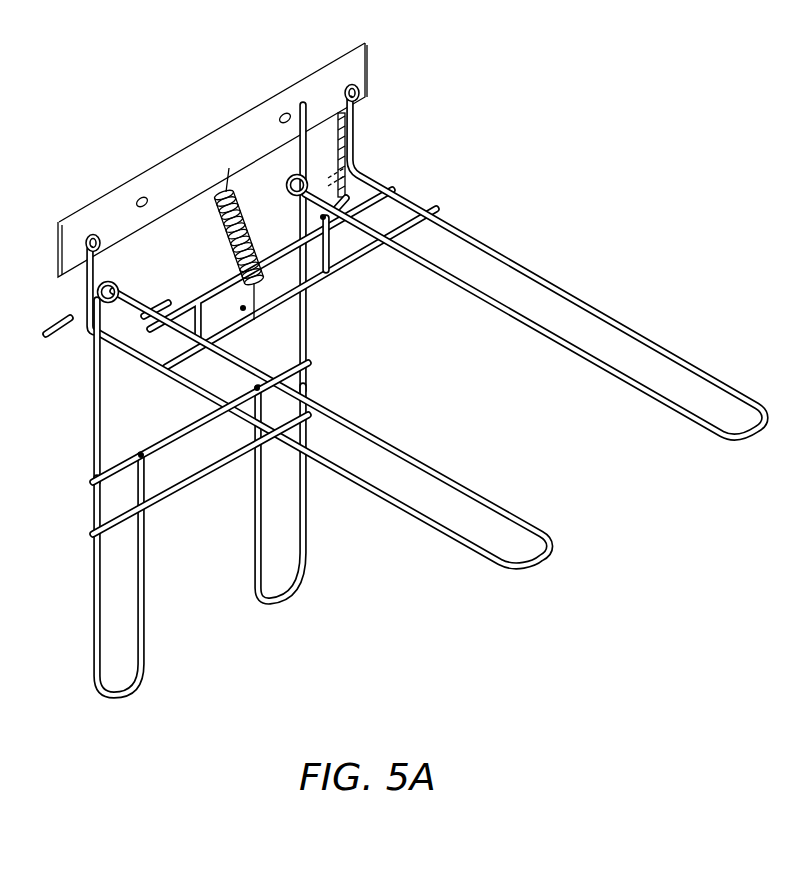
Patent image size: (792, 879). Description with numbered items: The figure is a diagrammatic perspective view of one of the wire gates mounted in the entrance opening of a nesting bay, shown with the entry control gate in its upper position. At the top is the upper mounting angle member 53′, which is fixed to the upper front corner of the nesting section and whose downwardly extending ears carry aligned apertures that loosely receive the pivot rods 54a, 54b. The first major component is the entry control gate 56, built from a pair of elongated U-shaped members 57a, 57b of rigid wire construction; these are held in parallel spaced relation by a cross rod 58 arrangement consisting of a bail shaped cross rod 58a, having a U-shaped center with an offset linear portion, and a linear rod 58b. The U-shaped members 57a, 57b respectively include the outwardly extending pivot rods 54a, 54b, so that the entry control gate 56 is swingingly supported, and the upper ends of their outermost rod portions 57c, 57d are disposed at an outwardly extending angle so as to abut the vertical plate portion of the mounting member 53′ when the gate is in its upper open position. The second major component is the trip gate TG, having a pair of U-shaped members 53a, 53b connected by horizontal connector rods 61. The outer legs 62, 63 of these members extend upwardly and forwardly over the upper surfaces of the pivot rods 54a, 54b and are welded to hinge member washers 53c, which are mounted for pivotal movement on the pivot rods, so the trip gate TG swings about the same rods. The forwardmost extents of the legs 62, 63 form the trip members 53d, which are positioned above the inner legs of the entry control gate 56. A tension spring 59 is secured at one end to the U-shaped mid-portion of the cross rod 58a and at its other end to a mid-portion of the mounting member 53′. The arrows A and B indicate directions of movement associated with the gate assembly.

The upper mounting angle member 53′ is at (216, 147).
The U-shaped member of trip gate 53a is at (145, 642).
The U-shaped member of trip gate 53b is at (307, 554).
The hinge member washers 53c is at (95, 352).
The trip members 53d is at (140, 310).
The pivot rod 54a is at (104, 300).
The pivot rod 54b is at (308, 175).
The entry control gate 56 is at (426, 332).
The U-shaped member 57a is at (500, 507).
The U-shaped member 57b is at (692, 368).
The outermost rod portion 57c is at (96, 237).
The outermost rod portion 57d is at (360, 100).
The cross rod 58 is at (300, 248).
The bail shaped cross rod 58a is at (160, 334).
The linear rod 58b is at (413, 207).
The tension spring 59 is at (237, 255).
The horizontal connector rods 61 is at (193, 480).
The outer leg 62 is at (95, 445).
The outer leg 63 is at (304, 343).
The trip gate TG is at (92, 608).
The direction arrow A is at (253, 657).
The direction arrow B is at (660, 498).